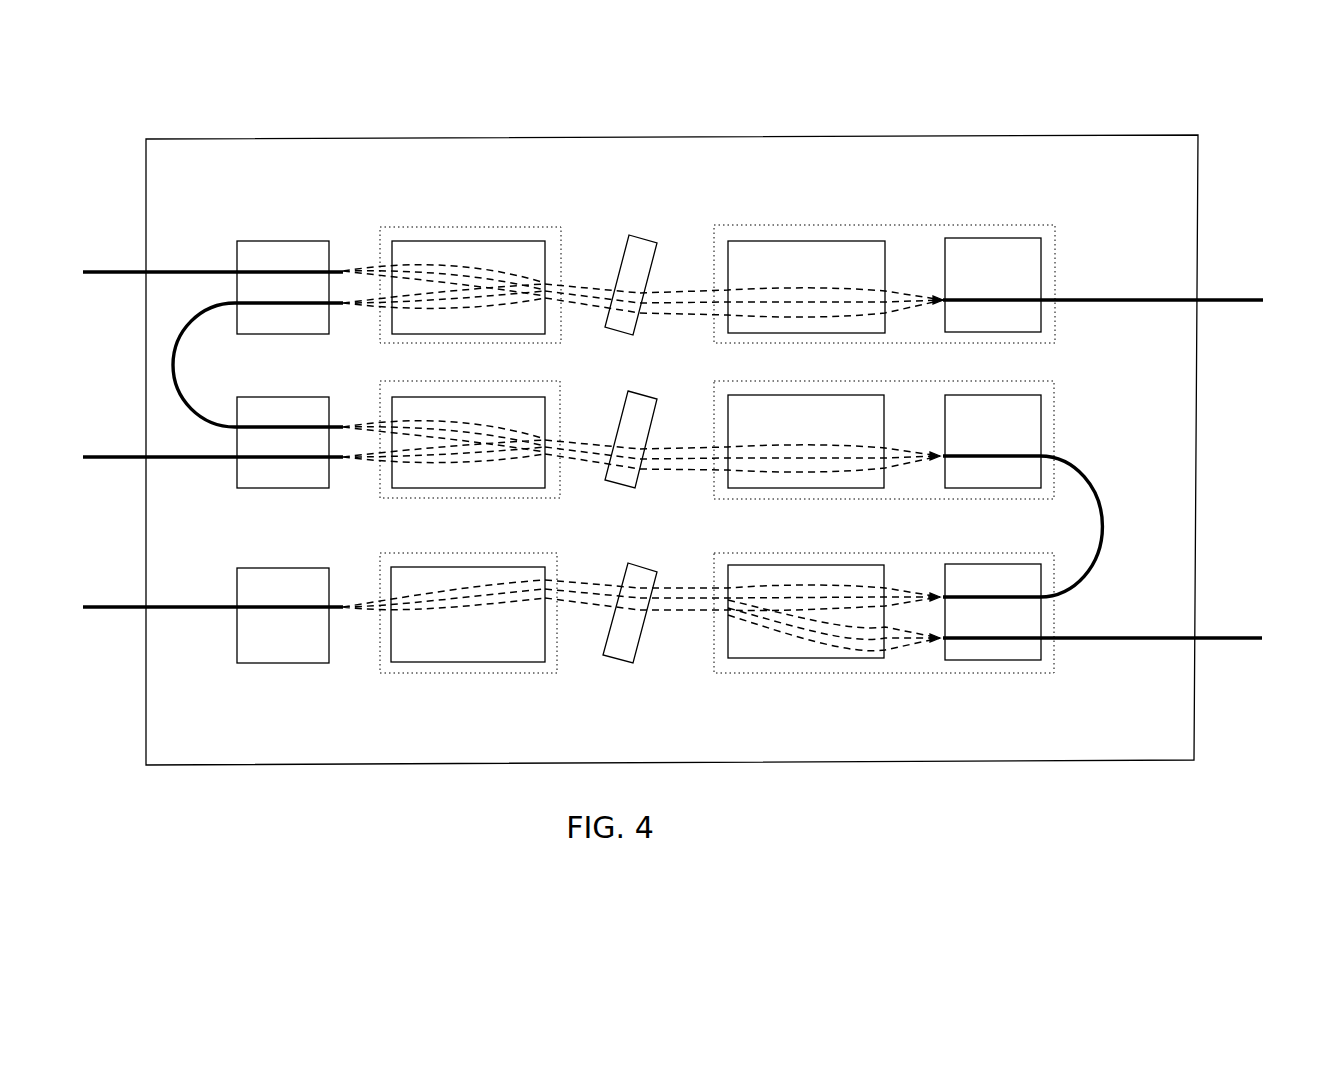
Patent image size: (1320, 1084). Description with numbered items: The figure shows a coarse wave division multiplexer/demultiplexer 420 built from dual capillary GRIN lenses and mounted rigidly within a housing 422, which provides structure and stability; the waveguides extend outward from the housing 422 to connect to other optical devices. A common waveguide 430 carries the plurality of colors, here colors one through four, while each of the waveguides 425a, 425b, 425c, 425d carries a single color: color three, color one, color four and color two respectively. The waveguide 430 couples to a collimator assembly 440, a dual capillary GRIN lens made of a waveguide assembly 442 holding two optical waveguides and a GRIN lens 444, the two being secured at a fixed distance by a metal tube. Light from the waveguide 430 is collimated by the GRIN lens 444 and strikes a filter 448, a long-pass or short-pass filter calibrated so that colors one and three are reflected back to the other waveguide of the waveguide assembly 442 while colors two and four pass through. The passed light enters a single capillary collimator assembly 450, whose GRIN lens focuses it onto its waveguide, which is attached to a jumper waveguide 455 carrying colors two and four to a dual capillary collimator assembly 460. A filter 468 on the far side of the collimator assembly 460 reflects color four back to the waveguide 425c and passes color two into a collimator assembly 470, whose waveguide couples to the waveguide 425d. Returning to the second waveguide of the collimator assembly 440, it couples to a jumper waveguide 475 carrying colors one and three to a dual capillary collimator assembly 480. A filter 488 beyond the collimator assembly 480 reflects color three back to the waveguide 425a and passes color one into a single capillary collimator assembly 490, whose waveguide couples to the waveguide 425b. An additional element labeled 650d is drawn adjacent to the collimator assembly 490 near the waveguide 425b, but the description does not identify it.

The coarse wave division multiplexer/demultiplexer 420 is at (608, 105).
The housing 422 is at (247, 155).
The waveguide 425a is at (100, 270).
The waveguide 425b is at (1233, 298).
The waveguide 425c is at (1212, 635).
The waveguide 425d is at (100, 605).
The waveguide 430 is at (97, 457).
The collimator assembly 440 is at (451, 424).
The waveguide assembly 442 is at (269, 410).
The GRIN lens 444 is at (483, 410).
The filter 448 is at (640, 395).
The collimator assembly 450 is at (900, 395).
The jumper waveguide 455 is at (1103, 510).
The collimator assembly 460 is at (923, 563).
The filter 468 is at (632, 570).
The collimator assembly 470 is at (362, 567).
The jumper waveguide 475 is at (172, 362).
The collimator assembly 480 is at (353, 240).
The filter 488 is at (637, 252).
The collimator assembly 490 is at (900, 245).
The fiber collimator block 650d is at (1057, 262).